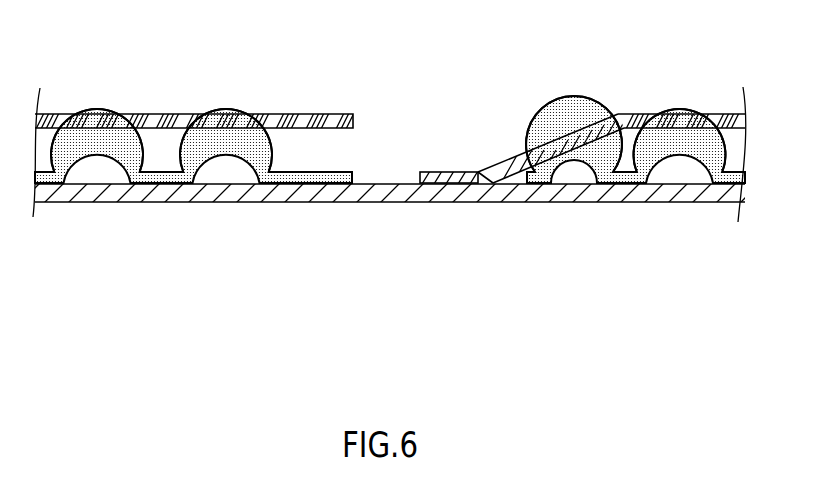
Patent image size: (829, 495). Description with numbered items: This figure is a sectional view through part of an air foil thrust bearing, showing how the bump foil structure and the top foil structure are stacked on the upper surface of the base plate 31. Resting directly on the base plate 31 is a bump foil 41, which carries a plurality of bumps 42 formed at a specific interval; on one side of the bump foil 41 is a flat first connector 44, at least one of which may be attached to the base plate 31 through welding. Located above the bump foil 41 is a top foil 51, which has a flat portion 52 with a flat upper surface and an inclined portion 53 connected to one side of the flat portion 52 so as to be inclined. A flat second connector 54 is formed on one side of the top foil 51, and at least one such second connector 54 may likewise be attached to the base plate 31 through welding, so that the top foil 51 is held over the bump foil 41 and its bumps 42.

The base plate 31 is at (398, 192).
The bump foil 41 is at (257, 130).
The bump 42 is at (97, 142).
The first connector 44 is at (336, 171).
The top foil 51 is at (390, 105).
The flat portion 52 is at (320, 115).
The inclined portion 53 is at (537, 153).
The second connector 54 is at (440, 177).